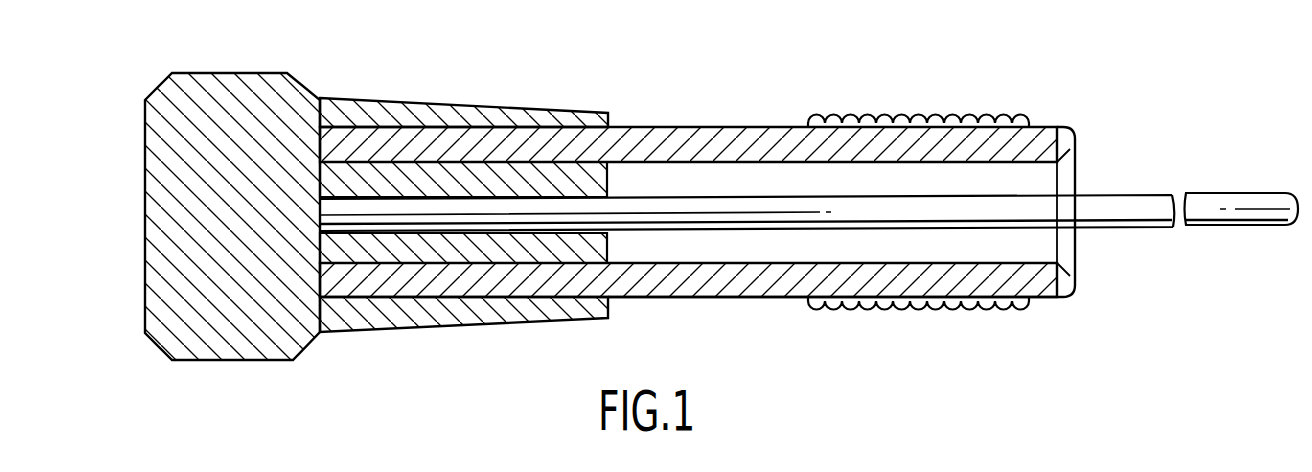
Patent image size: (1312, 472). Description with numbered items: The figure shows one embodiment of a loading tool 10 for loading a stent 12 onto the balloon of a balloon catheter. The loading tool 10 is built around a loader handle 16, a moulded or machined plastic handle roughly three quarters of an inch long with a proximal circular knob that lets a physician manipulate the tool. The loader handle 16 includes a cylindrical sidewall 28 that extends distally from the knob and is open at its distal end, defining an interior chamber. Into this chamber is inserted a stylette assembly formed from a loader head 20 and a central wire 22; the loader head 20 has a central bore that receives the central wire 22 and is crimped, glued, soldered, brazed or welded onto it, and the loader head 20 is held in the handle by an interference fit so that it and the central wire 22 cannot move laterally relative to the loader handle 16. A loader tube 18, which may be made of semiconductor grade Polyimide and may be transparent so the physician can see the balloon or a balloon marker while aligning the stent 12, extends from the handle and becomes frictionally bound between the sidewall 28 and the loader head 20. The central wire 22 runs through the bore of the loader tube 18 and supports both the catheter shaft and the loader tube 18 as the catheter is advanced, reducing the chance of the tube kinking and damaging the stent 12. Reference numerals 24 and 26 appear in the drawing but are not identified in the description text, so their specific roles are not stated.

The loading tool 10 is at (721, 187).
The stent 12 is at (947, 116).
The loader handle 16 is at (283, 97).
The loader tube 18 is at (718, 143).
The loader head 20 is at (467, 183).
The central wire 22 is at (1115, 207).
The lower tube wall 24 is at (680, 298).
The bore 26 is at (538, 210).
The sidewall 28 is at (395, 113).